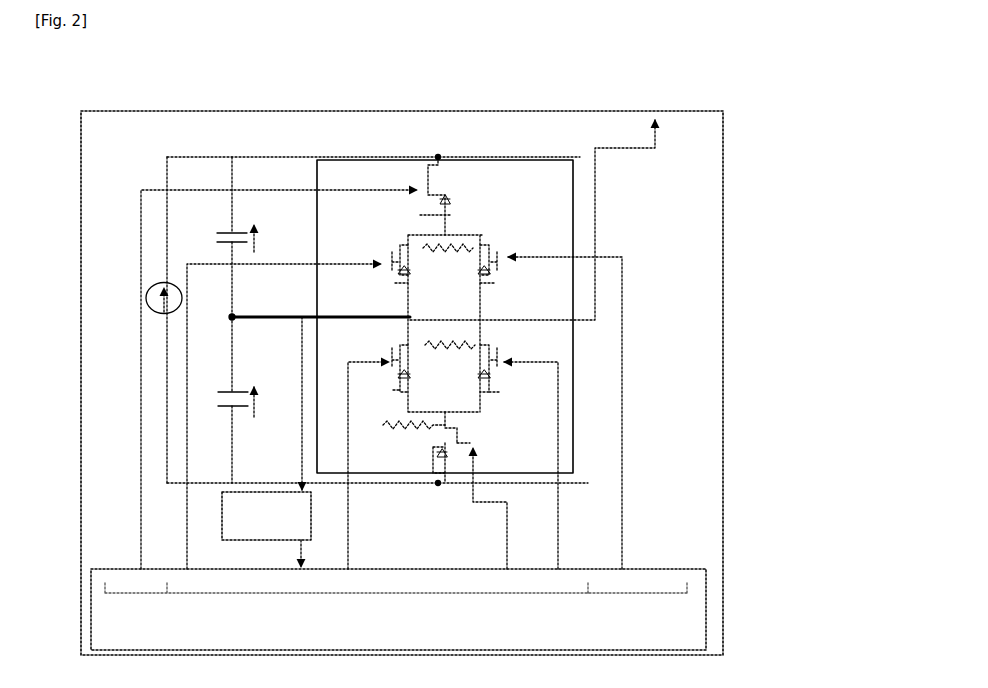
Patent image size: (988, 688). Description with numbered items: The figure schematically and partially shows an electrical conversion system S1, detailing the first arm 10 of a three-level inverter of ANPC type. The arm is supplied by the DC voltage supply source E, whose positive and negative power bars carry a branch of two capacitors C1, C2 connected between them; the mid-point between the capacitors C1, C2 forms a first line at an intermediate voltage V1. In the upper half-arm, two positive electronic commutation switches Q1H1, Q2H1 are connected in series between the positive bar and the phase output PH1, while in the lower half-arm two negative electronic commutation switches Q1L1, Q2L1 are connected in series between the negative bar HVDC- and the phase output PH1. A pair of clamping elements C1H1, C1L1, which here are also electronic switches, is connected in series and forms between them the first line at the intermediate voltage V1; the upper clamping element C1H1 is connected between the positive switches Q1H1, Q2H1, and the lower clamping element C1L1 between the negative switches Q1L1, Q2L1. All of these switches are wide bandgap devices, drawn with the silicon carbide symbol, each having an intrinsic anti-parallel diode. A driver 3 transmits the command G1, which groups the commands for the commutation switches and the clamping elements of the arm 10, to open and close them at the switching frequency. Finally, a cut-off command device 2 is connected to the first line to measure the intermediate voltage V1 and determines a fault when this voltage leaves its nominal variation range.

The first arm 10 is at (393, 168).
The cut-off command device 2 is at (266, 529).
The driver 3 is at (398, 609).
The electrical conversion system S1 is at (784, 225).
The DC voltage supply source E is at (147, 299).
The capacitor C1 is at (237, 237).
The capacitor C2 is at (240, 400).
The first intermediate voltage V1 is at (319, 394).
The phase output PH1 is at (532, 220).
The second power bar HVDC- is at (475, 487).
The positive electronic commutation switch Q1H1 is at (320, 363).
The positive electronic commutation switch Q2H1 is at (550, 400).
The upper clamping element C1H1 is at (298, 403).
The lower clamping element C1L1 is at (375, 456).
The negative electronic commutation switch Q1L1 is at (518, 457).
The negative electronic commutation switch Q2L1 is at (470, 490).
The command G1 is at (396, 608).